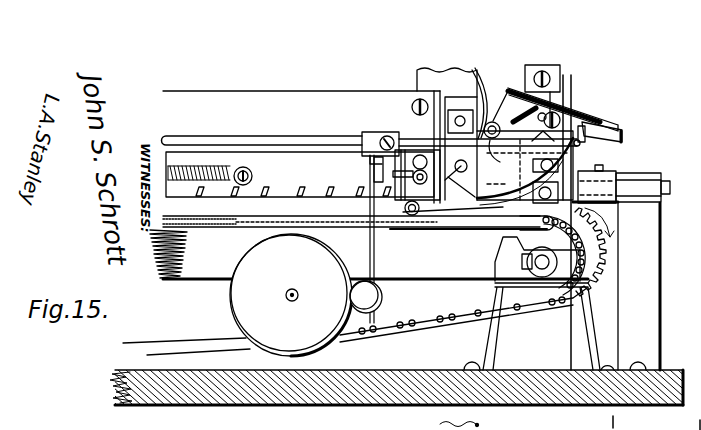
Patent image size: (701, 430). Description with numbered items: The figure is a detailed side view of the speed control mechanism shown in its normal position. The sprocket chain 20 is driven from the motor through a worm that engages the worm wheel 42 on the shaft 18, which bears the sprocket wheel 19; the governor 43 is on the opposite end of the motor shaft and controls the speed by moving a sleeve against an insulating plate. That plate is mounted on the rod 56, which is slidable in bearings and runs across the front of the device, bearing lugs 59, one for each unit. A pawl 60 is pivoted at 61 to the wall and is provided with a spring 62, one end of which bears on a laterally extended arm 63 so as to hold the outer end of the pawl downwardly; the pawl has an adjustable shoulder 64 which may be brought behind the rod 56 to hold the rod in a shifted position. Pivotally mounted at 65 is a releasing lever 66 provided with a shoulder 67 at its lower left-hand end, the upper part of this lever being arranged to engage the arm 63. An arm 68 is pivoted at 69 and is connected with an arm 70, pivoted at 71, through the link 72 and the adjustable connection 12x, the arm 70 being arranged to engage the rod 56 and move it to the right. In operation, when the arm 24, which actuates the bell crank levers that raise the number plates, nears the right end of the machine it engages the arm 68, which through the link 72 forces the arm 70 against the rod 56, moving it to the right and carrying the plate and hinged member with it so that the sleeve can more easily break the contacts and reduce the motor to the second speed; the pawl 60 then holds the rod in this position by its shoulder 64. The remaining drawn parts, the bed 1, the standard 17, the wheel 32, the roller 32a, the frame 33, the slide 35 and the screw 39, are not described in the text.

The bed 1 is at (366, 376).
The standard 17 is at (485, 347).
The shaft 18 is at (283, 131).
The sprocket wheel 19 is at (537, 257).
The sprocket chain 20 is at (395, 327).
The arm 24 is at (313, 218).
The wheel 32 is at (291, 295).
The roller 32a is at (382, 297).
The frame 33 is at (300, 174).
The slide 35 is at (296, 212).
The screw 39 is at (224, 170).
The worm wheel 42 is at (605, 260).
The governor 43 is at (693, 415).
The rod 56 is at (286, 138).
The lug 59 is at (374, 163).
The pawl 60 is at (602, 119).
The pivot 61 is at (500, 112).
The spring 62 is at (486, 103).
The laterally extended arm 63 is at (571, 109).
The adjustable shoulder 64 is at (606, 139).
The pivot 65 is at (461, 172).
The releasing lever 66 is at (525, 169).
The shoulder 67 is at (452, 188).
The arm 68 is at (405, 210).
The pivot 69 is at (406, 200).
The arm 70 is at (555, 97).
The pivot 71 is at (560, 82).
The link 72 is at (497, 208).
The cylinder 12x is at (571, 171).